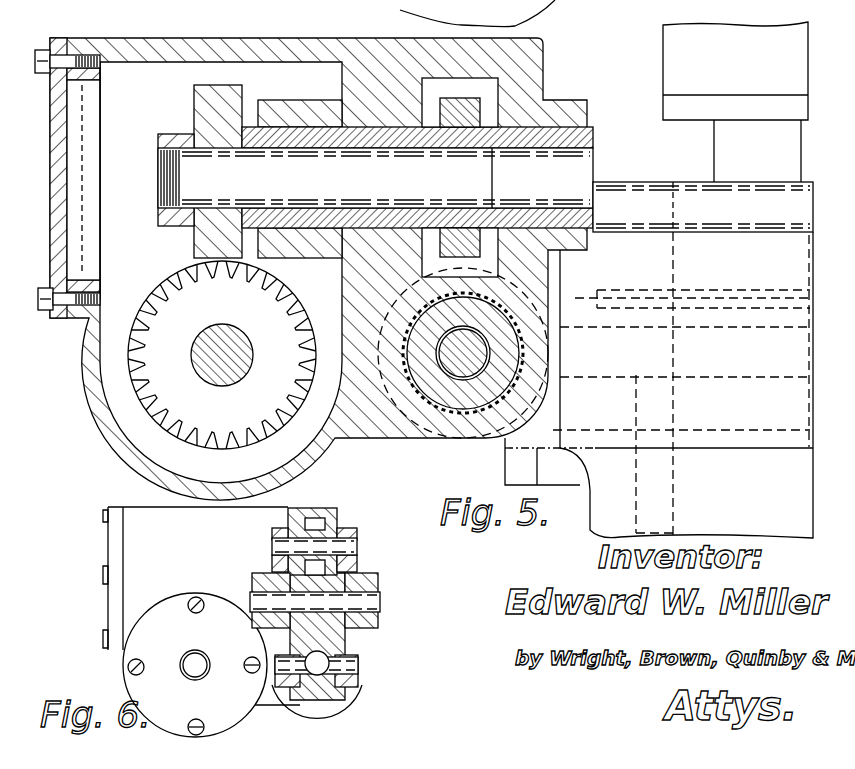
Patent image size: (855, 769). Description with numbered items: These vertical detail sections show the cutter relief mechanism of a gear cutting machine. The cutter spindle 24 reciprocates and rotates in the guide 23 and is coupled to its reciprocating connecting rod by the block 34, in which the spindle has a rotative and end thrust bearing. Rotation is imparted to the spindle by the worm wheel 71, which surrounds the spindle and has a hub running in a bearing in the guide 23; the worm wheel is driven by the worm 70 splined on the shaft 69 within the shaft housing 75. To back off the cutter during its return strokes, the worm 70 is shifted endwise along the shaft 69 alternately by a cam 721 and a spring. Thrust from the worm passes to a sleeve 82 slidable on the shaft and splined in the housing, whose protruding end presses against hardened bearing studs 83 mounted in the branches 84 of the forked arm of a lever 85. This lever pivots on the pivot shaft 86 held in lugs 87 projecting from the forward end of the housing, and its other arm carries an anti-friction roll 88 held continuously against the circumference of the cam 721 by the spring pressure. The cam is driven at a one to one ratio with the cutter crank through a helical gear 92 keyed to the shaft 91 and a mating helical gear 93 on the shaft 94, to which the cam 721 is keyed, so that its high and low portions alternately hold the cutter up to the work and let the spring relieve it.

In FIG. 5, the guide 23 is at (659, 386).
In FIG. 5, the cutter spindle 24 is at (735, 158).
In FIG. 5, the block 34 is at (683, 61).
In FIG. 5, the shaft 69 is at (455, 367).
In FIG. 6, the shaft 69 is at (320, 668).
In FIG. 5, the worm 70 is at (440, 426).
In FIG. 5, the worm wheel 71 is at (573, 340).
In FIG. 5, the shaft housing 75 is at (376, 413).
In FIG. 6, the shaft housing 75 is at (201, 606).
In FIG. 5, the cam 721 is at (477, 108).
In FIG. 5, the sleeve 82 is at (467, 397).
In FIG. 6, the sleeve 82 is at (312, 695).
In FIG. 6, the bearing studs 83 is at (360, 665).
In FIG. 6, the branches 84 is at (345, 680).
In FIG. 6, the lever 85 is at (355, 635).
In FIG. 6, the pivot shaft 86 is at (370, 600).
In FIG. 6, the lugs 87 is at (365, 580).
In FIG. 6, the anti-friction roll 88 is at (318, 525).
In FIG. 5, the shaft 91 is at (220, 346).
In FIG. 6, the shaft 91 is at (193, 665).
In FIG. 5, the helical gear 92 is at (170, 312).
In FIG. 5, the helical gear 93 is at (200, 107).
In FIG. 5, the shaft 94 is at (375, 178).